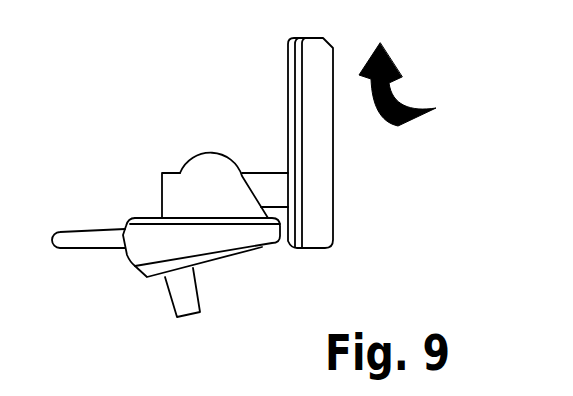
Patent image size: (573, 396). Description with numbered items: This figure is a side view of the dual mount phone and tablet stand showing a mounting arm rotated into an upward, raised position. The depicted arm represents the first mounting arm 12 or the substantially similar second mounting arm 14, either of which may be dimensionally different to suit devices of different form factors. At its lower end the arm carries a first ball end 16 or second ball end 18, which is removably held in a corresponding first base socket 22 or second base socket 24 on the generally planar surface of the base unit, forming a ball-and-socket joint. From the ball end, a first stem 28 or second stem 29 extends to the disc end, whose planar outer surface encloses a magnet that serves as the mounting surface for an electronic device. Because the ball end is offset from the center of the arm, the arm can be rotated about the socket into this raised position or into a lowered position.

The first mounting arm 12 is at (367, 143).
The second mounting arm 14 is at (350, 200).
The first ball end 16 is at (184, 166).
The second ball end 18 is at (195, 153).
The first base socket 22 is at (157, 240).
The second base socket 24 is at (160, 204).
The first stem 28 is at (225, 144).
The second stem 29 is at (261, 173).